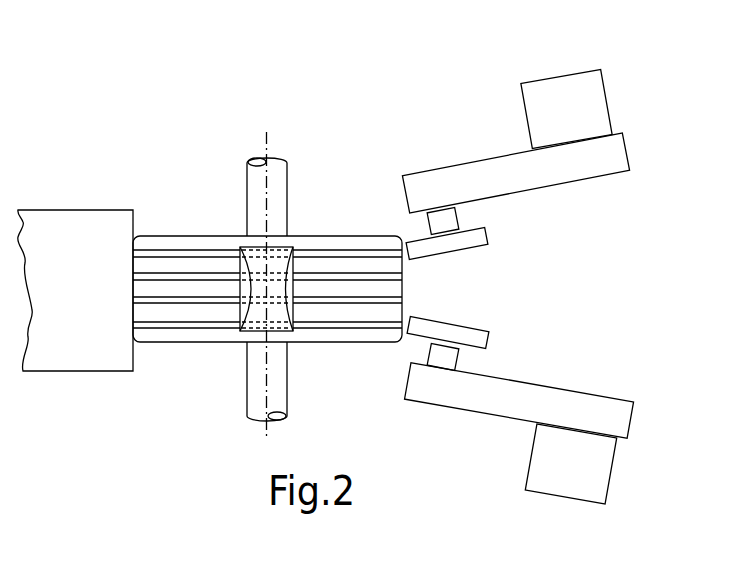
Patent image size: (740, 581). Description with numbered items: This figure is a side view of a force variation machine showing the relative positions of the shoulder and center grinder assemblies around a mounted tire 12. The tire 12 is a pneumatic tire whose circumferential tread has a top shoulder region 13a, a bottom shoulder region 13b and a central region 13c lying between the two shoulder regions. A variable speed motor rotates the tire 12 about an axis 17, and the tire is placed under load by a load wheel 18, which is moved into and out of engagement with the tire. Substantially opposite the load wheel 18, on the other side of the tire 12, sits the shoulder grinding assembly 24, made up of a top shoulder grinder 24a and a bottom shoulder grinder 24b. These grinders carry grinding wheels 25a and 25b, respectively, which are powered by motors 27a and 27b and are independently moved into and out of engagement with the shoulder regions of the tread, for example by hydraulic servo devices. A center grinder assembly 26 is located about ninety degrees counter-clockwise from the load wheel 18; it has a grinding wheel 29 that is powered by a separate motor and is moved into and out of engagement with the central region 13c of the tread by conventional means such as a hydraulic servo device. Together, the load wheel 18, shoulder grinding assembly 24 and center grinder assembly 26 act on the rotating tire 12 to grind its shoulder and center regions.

The tire 12 is at (200, 343).
The top shoulder region 13a is at (410, 264).
The bottom shoulder region 13b is at (414, 304).
The central region 13c is at (410, 287).
The axis 17 is at (266, 134).
The load wheel 18 is at (88, 230).
The shoulder grinding assembly 24 is at (642, 163).
The top shoulder grinder 24a is at (618, 76).
The bottom shoulder grinder 24b is at (630, 505).
The grinding wheel 25a is at (472, 239).
The grinding wheel 25b is at (465, 338).
The center grinder assembly 26 is at (236, 226).
The motor 27a is at (592, 115).
The motor 27b is at (577, 465).
The grinding wheel 29 is at (285, 290).